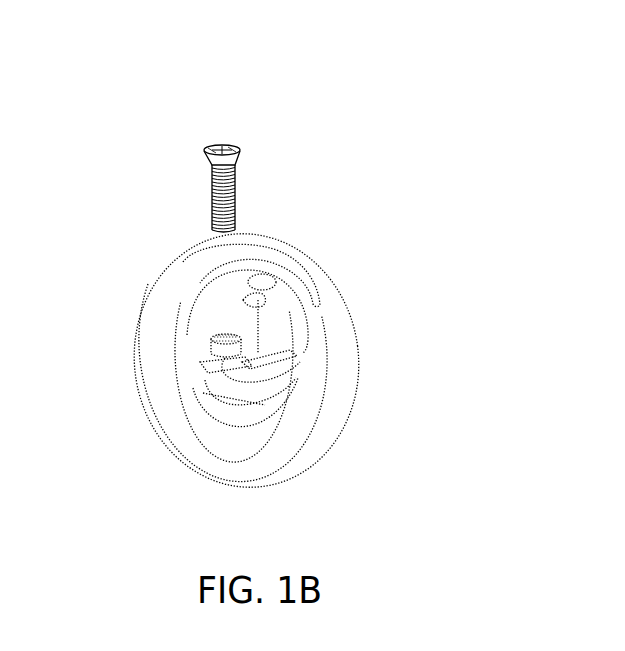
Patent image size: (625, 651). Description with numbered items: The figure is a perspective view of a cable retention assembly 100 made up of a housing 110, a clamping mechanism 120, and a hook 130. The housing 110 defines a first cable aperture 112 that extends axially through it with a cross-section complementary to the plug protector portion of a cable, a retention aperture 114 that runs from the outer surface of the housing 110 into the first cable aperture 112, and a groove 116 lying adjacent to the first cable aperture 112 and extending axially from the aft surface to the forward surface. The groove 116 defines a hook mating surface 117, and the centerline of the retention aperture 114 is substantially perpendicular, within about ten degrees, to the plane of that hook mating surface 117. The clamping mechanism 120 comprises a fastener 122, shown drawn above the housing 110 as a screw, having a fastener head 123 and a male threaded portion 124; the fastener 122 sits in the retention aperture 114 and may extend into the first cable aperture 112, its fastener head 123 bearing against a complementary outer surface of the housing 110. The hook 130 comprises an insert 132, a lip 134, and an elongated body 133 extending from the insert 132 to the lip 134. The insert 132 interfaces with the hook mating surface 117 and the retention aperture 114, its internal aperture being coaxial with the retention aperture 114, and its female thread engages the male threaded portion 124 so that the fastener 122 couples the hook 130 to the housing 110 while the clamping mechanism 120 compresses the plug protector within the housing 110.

The cable retention assembly 100 is at (62, 87).
The housing 110 is at (336, 270).
The first cable aperture 112 is at (198, 385).
The retention aperture 114 is at (213, 248).
The groove 116 is at (240, 308).
The hook mating surface 117 is at (245, 303).
The clamping mechanism 120 is at (246, 148).
The fastener 122 is at (218, 185).
The fastener head 123 is at (218, 150).
The male threaded portion 124 is at (216, 208).
The hook 130 is at (290, 358).
The insert 132 is at (223, 349).
The elongated body 133 is at (208, 372).
The lip 134 is at (253, 370).